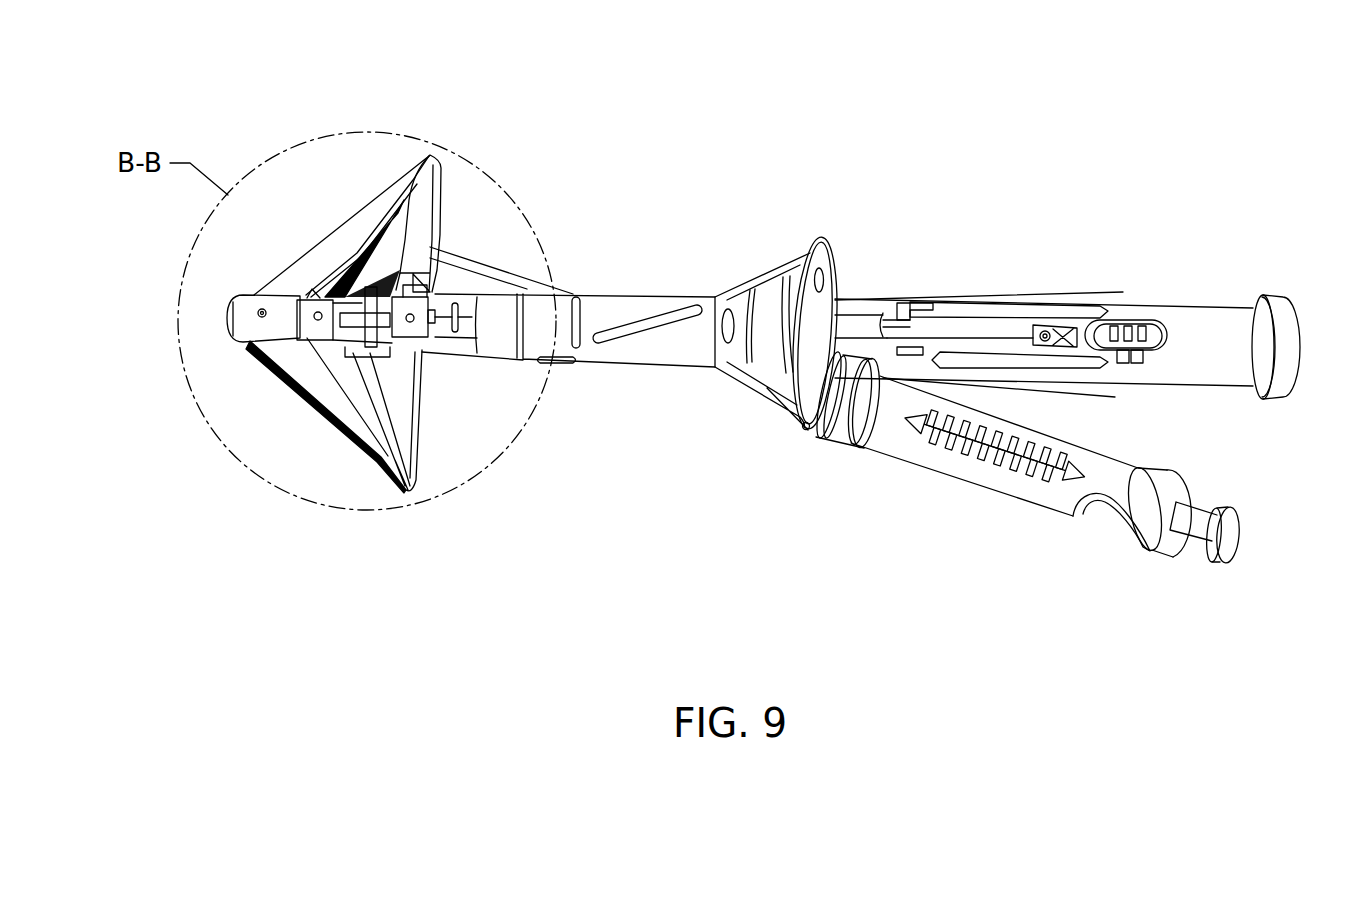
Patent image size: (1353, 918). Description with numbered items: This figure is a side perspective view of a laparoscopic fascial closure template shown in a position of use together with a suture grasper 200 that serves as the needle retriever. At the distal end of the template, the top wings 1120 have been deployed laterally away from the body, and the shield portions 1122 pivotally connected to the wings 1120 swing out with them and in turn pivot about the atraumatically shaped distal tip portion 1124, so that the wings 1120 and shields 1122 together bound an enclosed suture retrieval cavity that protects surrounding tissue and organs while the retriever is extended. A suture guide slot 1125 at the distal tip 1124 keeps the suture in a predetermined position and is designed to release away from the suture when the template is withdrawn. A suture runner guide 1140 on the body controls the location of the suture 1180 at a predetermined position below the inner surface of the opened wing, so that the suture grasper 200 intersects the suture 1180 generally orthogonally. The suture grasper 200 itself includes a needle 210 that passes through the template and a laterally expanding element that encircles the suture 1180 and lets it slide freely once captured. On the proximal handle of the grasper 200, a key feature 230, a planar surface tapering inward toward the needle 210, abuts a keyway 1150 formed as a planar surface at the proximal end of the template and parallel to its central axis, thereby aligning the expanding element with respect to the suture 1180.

The suture grasper 200 is at (967, 473).
The needle 210 is at (500, 271).
The key feature 230 is at (897, 298).
The top wings 1120 is at (408, 198).
The shield portions 1122 is at (372, 208).
The distal tip portion 1124 is at (258, 332).
The suture guide slot 1125 is at (232, 334).
The suture runner guide 1140 is at (388, 405).
The keyway 1150 is at (840, 295).
The suture 1180 is at (403, 246).